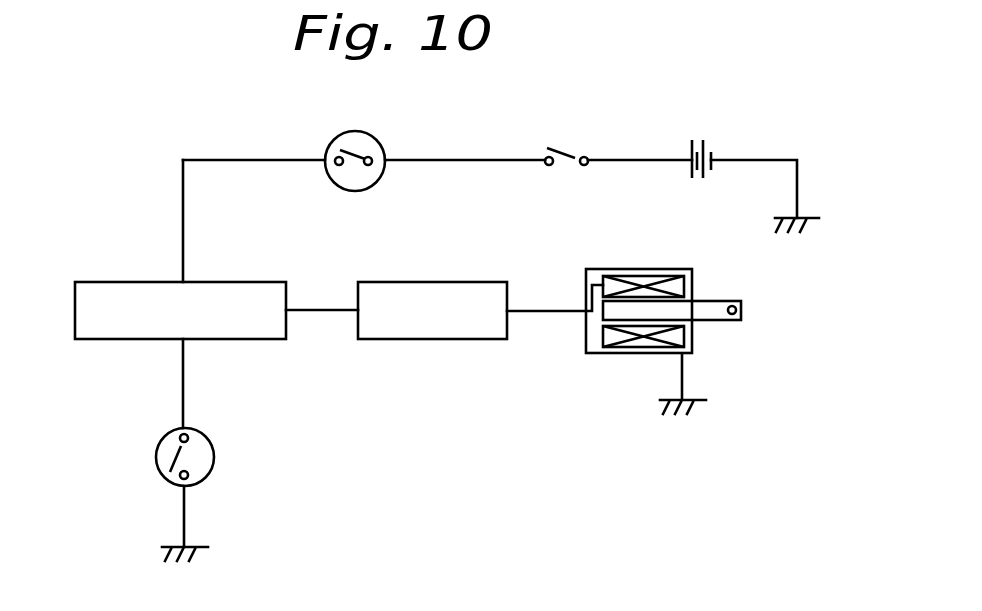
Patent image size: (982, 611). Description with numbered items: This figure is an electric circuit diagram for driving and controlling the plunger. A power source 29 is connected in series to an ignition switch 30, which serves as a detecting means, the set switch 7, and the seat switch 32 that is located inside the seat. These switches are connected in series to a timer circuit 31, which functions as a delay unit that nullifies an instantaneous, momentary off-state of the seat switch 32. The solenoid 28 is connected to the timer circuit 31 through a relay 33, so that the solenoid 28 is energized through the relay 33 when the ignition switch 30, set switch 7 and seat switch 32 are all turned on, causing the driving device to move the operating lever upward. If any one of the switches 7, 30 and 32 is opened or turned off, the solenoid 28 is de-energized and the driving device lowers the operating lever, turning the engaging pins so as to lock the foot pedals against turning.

The set switch 7 is at (376, 139).
The solenoid 28 is at (657, 268).
The power source 29 is at (690, 148).
The ignition switch 30 is at (569, 152).
The timer circuit 31 is at (245, 282).
The seat switch 32 is at (213, 470).
The relay 33 is at (455, 282).